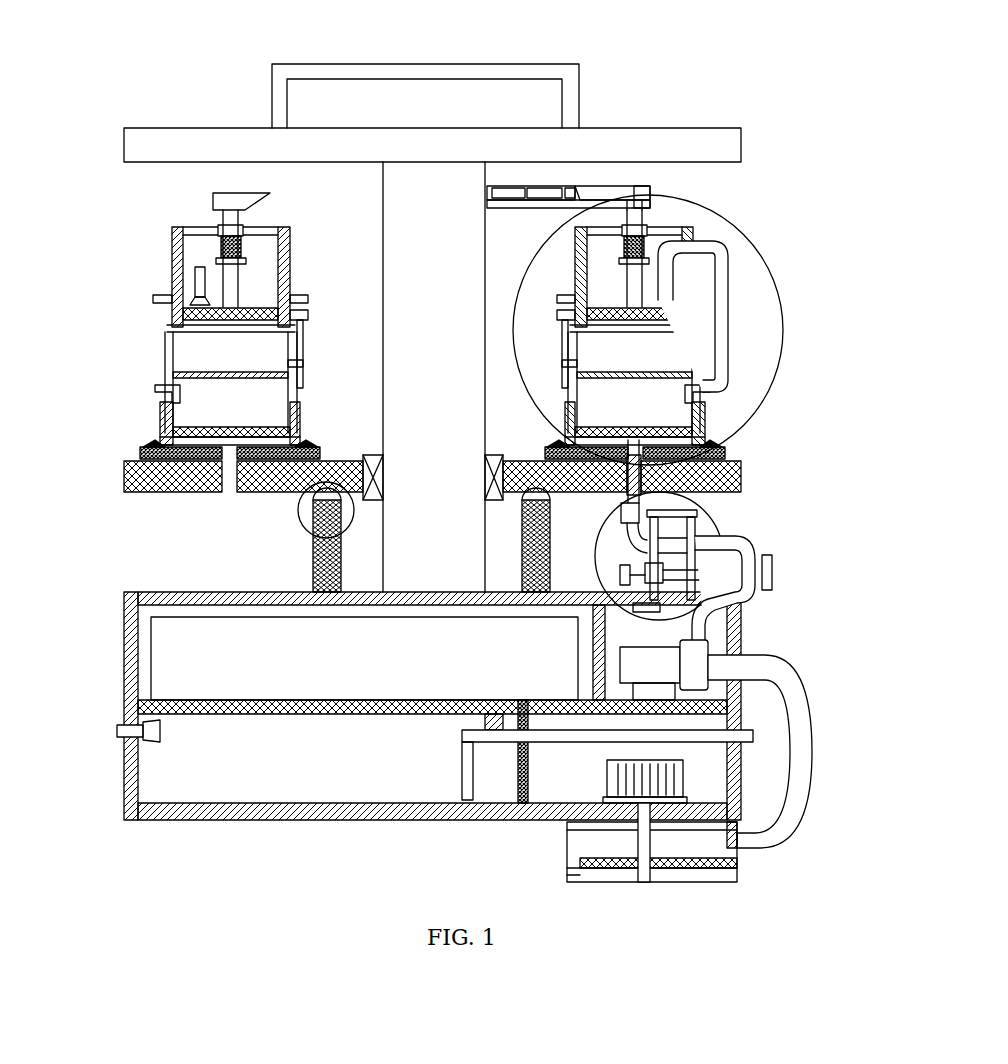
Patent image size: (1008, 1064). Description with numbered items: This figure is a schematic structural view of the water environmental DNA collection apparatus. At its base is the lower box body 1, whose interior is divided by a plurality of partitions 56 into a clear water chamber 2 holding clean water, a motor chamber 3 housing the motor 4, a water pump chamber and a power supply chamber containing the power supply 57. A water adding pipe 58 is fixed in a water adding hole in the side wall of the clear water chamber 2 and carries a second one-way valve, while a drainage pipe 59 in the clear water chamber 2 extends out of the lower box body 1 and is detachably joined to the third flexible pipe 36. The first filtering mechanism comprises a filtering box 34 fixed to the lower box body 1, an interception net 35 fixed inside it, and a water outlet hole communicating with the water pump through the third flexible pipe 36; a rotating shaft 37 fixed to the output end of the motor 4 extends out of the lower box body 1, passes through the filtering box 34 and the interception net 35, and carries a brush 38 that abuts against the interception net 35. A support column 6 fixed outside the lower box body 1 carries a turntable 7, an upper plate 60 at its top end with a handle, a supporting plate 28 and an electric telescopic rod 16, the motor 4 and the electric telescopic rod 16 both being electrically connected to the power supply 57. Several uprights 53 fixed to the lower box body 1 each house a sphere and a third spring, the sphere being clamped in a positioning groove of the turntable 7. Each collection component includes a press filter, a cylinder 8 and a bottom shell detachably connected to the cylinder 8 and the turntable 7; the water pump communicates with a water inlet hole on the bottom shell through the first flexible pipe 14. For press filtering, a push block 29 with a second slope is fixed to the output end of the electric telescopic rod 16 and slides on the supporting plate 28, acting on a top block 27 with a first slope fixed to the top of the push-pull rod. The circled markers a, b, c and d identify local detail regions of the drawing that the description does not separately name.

The upper plate 60 is at (150, 148).
The supporting plate 28 is at (485, 205).
The electric telescopic rod 16 is at (512, 193).
The push block 29 is at (577, 195).
The top block 27 is at (653, 193).
The support column 6 is at (422, 316).
The enlarged portion a is at (783, 353).
The sealing ring b is at (140, 456).
The turntable 7 is at (135, 487).
The enlarged portion c is at (720, 520).
The enlarged portion d is at (303, 508).
The first flexible pipe 14 is at (750, 613).
The upright 53 is at (313, 584).
The lower box body 1 is at (133, 647).
The power supply 57 is at (153, 670).
The cylinder 8 is at (678, 667).
The water adding pipe 58 is at (118, 730).
The drainage pipe 59 is at (690, 733).
The clear water chamber 2 is at (157, 788).
The motor 4 is at (667, 780).
The third flexible pipe 36 is at (790, 800).
The interception net 35 is at (717, 860).
The brush 38 is at (693, 873).
The partition 56 is at (333, 715).
The motor chamber 3 is at (560, 780).
The filtering box 34 is at (568, 833).
The rotating shaft 37 is at (637, 842).